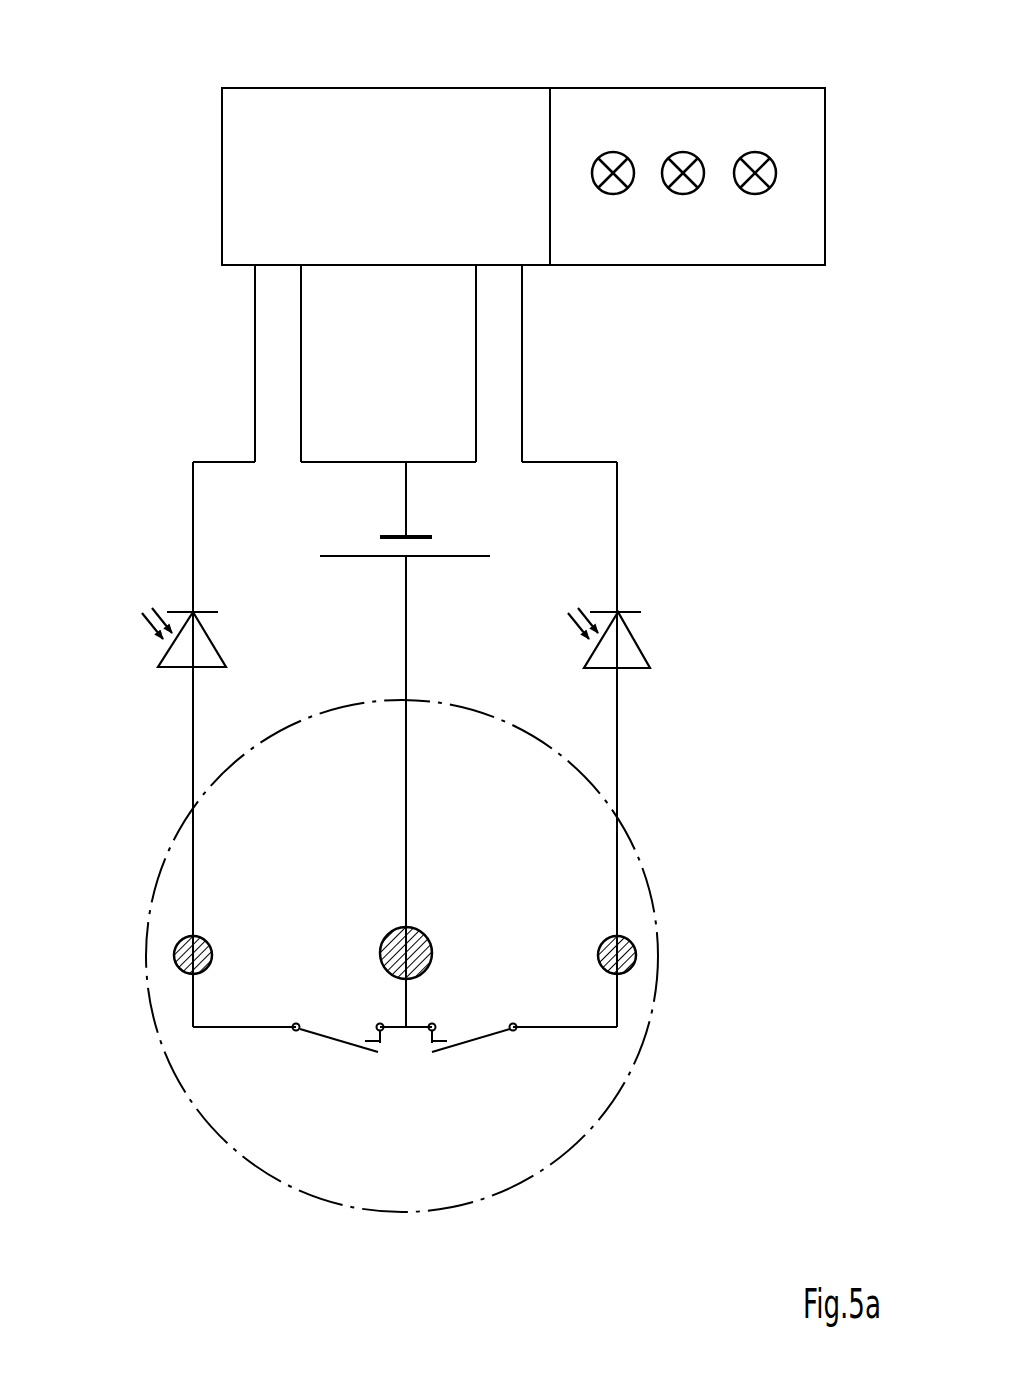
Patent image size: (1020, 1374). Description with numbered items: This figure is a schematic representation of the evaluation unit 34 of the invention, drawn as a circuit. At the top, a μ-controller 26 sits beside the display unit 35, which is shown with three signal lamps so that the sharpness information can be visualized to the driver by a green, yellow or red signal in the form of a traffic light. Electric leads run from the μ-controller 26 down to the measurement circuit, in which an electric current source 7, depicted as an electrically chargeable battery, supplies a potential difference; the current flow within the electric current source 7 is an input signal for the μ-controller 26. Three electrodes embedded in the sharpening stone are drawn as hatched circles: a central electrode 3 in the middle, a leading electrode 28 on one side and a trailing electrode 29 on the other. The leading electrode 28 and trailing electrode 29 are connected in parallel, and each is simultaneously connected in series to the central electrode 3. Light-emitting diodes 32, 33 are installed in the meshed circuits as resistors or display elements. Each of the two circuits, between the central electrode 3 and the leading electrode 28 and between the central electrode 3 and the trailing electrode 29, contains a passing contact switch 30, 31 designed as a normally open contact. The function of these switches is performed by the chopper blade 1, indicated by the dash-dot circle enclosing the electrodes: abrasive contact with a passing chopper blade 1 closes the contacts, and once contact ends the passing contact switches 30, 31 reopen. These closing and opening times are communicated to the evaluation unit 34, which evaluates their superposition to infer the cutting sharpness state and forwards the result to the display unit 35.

The evaluation unit 34 is at (160, 80).
The μ-controller 26 is at (465, 100).
The display unit 35 is at (701, 100).
The electric current source 7 is at (472, 540).
The light-emitting diode 33 is at (208, 650).
The light-emitting diode 32 is at (633, 651).
The chopper blade 1 is at (585, 1142).
The trailing electrode 29 is at (208, 947).
The central electrode 3 is at (433, 948).
The leading electrode 28 is at (600, 945).
The passing contact switch 31 is at (330, 1038).
The passing contact switch 30 is at (480, 1038).